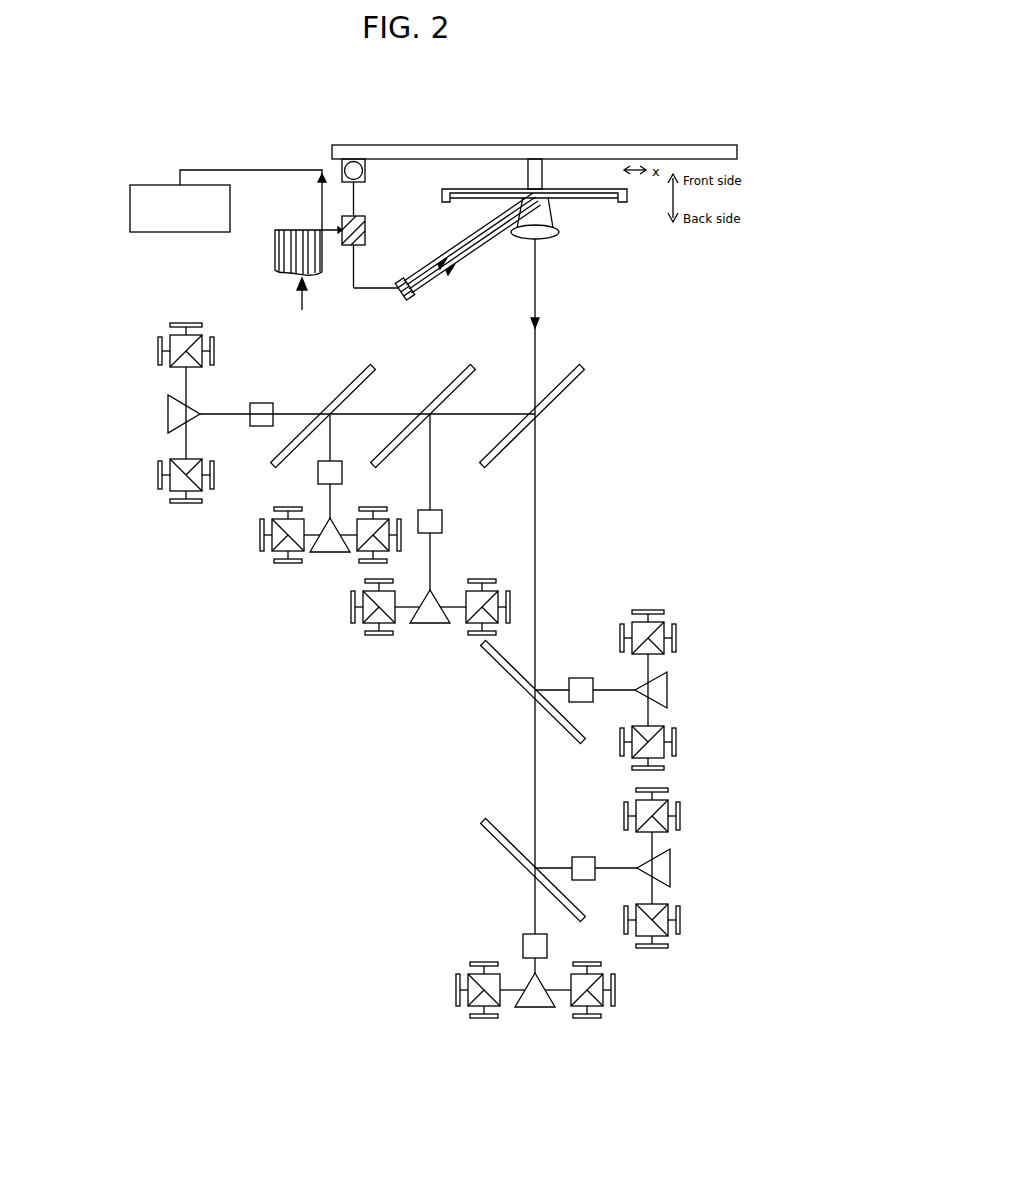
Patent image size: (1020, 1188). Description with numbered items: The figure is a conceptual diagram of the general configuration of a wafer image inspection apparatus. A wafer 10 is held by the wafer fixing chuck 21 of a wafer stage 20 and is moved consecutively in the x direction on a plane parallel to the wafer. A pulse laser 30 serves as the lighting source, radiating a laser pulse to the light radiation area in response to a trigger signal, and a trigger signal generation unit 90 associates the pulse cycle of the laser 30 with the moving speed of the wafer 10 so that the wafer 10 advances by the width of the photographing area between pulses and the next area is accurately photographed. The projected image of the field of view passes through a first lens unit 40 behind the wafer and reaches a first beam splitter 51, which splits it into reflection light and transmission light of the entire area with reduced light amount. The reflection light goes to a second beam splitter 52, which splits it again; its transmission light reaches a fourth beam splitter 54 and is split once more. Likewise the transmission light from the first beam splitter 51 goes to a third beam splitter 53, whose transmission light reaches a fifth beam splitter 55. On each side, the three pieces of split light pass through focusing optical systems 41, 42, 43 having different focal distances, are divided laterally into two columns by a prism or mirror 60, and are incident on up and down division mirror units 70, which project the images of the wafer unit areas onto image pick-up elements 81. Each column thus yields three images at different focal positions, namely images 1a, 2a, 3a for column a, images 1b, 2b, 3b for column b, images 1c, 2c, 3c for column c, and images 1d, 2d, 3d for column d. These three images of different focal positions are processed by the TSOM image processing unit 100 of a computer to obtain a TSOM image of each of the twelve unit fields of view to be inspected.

The wafer 10 is at (602, 203).
The wafer stage 20 is at (386, 148).
The wafer fixing chuck 21 is at (528, 173).
The laser 30 is at (408, 297).
The first lens unit 40 is at (548, 243).
The focusing optical system 41 is at (261, 403).
The focusing optical system 42 is at (318, 472).
The focusing optical system 43 is at (418, 520).
The first beam splitter 51 is at (560, 386).
The second beam splitter 52 is at (449, 386).
The third beam splitter 53 is at (500, 675).
The fourth beam splitter 54 is at (349, 386).
The fifth beam splitter 55 is at (500, 850).
The prism (or mirror) 60 is at (168, 414).
The up and down division mirror unit 70 is at (200, 460).
The image pick-up element 81 is at (108, 530).
The trigger signal generation unit 90 is at (366, 228).
The TSOM image processing unit 100 is at (138, 183).
The image of column a at first focal position 1a is at (178, 341).
The image of column b at first focal position 1b is at (485, 998).
The image of column c at first focal position 1c is at (178, 490).
The image of column d at first focal position 1d is at (585, 996).
The image of column a at second focal position 2a is at (283, 541).
The image of column b at second focal position 2b is at (662, 929).
The image of column c at second focal position 2c is at (375, 541).
The image of column d at second focal position 2d is at (662, 843).
The image of column a at third focal position 3a is at (380, 612).
The image of column b at third focal position 3b is at (659, 750).
The image of column c at third focal position 3c is at (480, 612).
The image of column d at third focal position 3d is at (659, 665).